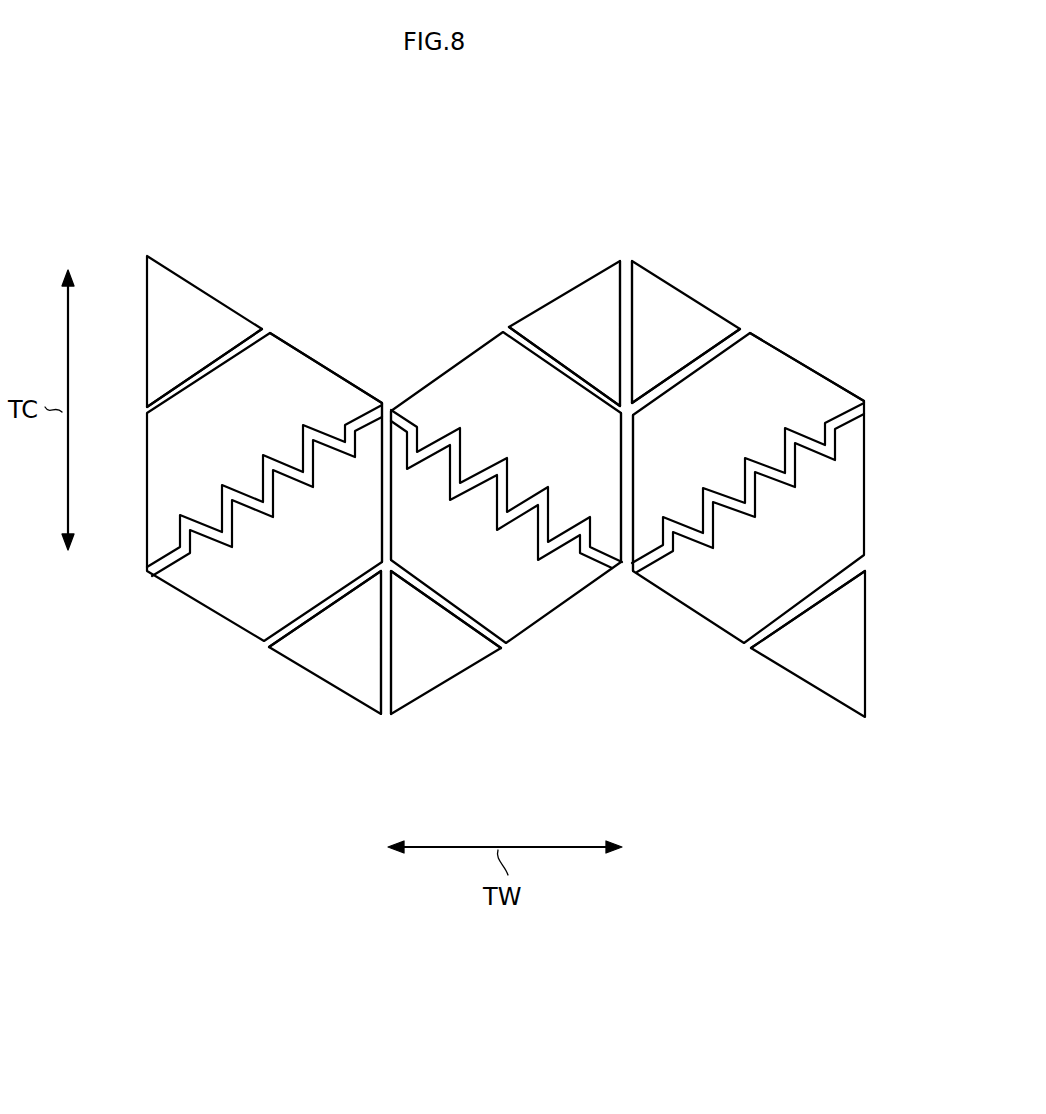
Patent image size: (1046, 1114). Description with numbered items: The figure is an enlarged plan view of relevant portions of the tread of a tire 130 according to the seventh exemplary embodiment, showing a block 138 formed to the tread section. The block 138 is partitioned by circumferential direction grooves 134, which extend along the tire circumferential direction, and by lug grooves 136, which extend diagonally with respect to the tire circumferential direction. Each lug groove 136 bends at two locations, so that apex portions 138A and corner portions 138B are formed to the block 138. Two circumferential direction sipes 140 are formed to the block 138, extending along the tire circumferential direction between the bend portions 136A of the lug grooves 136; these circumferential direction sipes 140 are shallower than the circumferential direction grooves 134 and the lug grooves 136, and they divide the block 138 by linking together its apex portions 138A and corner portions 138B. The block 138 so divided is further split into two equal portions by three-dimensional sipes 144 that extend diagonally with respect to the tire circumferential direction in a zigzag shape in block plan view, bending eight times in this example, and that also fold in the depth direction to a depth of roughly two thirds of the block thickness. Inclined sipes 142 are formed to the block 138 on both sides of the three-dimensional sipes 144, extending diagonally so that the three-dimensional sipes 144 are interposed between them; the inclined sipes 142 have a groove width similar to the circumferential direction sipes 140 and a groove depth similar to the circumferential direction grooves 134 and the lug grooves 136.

The tire 130 is at (722, 208).
The circumferential direction grooves 134 is at (130, 448).
The lug grooves 136 is at (527, 302).
The bend portions 136A is at (387, 325).
The block 138 is at (780, 345).
The apex portions 138A is at (640, 263).
The corner portions 138B is at (378, 393).
The circumferential direction sipes 140 is at (627, 323).
The inclined sipes 142 is at (245, 348).
The 3-dimensional sipes 144 is at (463, 433).